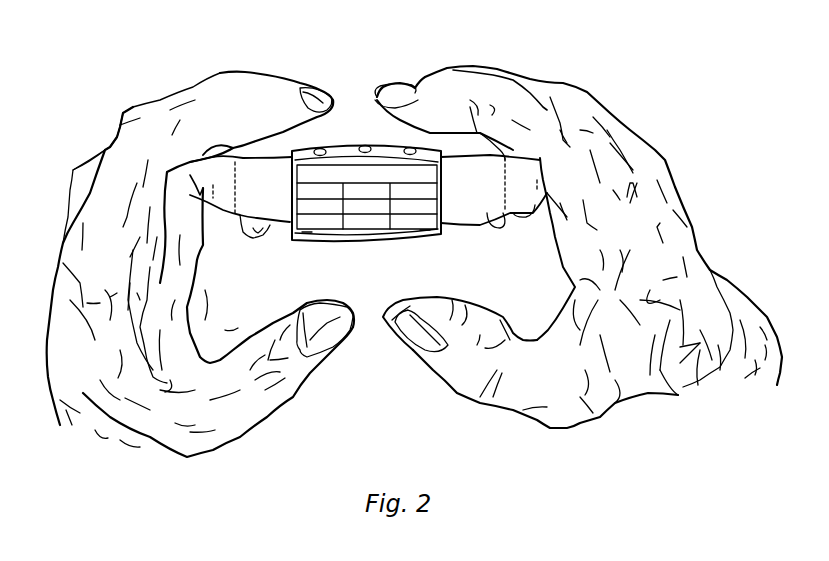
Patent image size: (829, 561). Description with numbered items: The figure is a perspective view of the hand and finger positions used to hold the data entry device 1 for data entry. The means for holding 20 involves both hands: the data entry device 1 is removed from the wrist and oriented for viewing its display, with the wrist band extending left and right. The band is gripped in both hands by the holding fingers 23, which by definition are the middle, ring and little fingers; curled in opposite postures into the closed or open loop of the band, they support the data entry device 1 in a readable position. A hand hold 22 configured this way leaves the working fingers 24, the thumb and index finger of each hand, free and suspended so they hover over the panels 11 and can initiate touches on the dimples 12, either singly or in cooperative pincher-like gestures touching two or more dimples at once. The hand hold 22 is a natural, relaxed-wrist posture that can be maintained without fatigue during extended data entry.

The data entry device 1 is at (302, 280).
The panels 11 is at (334, 245).
The dimples 12 is at (333, 150).
The means for holding 20 is at (393, 345).
The hand hold 22 is at (700, 192).
The holding fingers 23 is at (262, 240).
The working fingers 24 is at (200, 93).